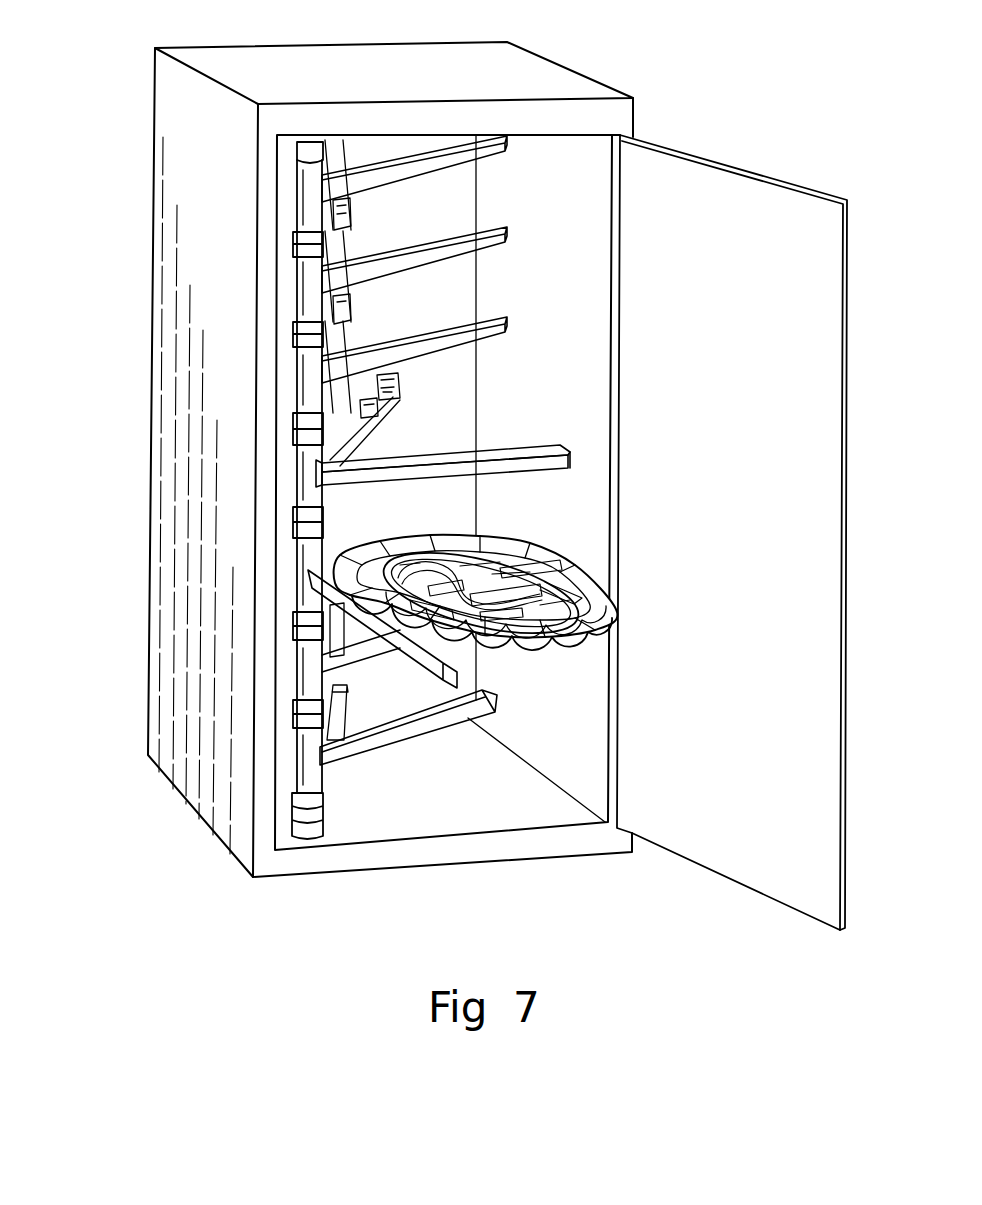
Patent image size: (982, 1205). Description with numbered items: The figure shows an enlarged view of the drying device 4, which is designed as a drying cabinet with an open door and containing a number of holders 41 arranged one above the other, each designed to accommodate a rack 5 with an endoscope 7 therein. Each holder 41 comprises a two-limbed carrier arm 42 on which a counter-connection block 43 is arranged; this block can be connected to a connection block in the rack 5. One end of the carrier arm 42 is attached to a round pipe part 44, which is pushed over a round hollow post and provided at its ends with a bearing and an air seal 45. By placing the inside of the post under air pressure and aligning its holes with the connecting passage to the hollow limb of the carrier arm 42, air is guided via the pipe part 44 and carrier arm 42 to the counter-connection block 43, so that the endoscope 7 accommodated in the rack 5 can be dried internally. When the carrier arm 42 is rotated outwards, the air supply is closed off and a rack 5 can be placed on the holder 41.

The drying device 4 is at (630, 75).
The rack 5 is at (565, 558).
The endoscope 7 is at (617, 627).
The holder 41 is at (488, 445).
The carrier arm 42 is at (390, 463).
The counter-connection block 43 is at (388, 397).
The pipe part 44 is at (310, 480).
The air seal 45 is at (300, 438).